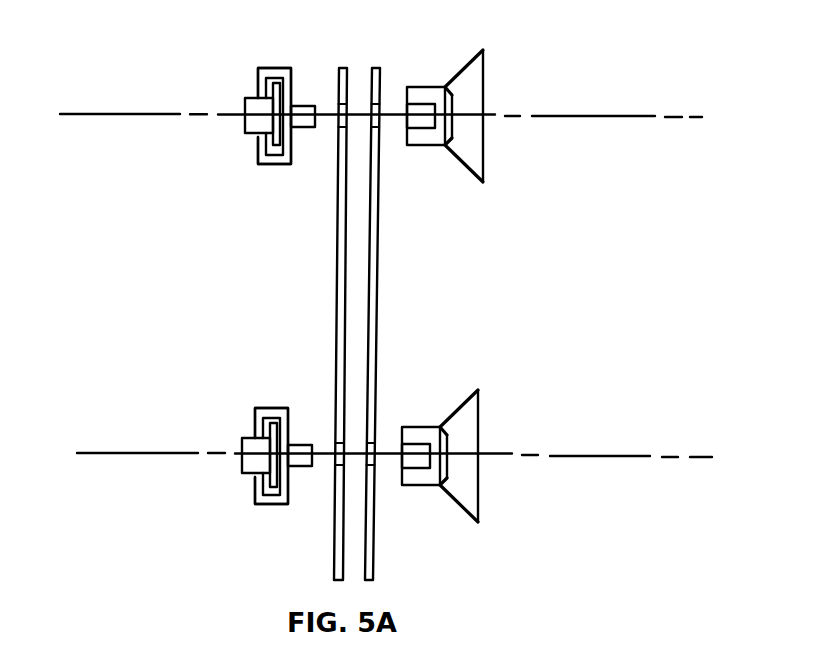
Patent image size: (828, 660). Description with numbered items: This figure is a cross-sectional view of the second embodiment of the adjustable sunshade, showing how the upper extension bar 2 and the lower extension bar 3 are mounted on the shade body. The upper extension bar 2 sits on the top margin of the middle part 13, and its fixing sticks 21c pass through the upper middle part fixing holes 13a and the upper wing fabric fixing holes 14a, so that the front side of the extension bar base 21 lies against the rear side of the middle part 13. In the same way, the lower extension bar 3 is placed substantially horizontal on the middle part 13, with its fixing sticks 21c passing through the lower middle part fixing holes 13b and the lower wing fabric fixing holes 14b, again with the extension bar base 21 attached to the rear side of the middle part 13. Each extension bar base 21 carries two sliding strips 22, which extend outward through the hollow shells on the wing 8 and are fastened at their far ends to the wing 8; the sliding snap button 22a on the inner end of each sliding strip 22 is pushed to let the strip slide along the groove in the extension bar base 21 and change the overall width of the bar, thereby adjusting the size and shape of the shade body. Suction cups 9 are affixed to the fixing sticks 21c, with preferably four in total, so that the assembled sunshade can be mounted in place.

The upper extension bar 2 is at (258, 80).
The lower extension bar 3 is at (255, 420).
The wing 8 is at (382, 286).
The suction cup 9 is at (470, 93).
The middle part 13 is at (336, 286).
The upper middle part fixing hole 13a is at (340, 115).
The lower middle part fixing hole 13b is at (337, 457).
The upper wing fabric fixing hole 14a is at (374, 117).
The lower wing fabric fixing hole 14b is at (368, 458).
The extension bar base 21 is at (278, 67).
The fixing stick 21c is at (305, 120).
The sliding strip 22 is at (262, 150).
The sliding snap button 22a is at (255, 122).